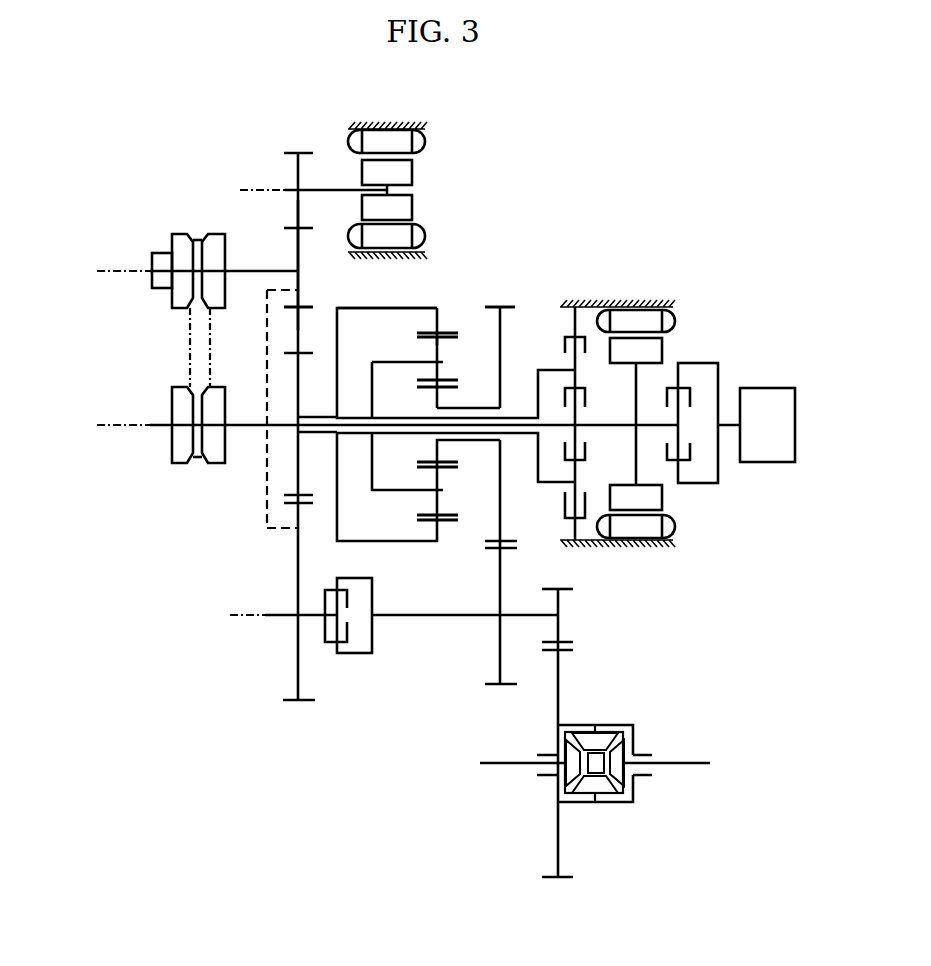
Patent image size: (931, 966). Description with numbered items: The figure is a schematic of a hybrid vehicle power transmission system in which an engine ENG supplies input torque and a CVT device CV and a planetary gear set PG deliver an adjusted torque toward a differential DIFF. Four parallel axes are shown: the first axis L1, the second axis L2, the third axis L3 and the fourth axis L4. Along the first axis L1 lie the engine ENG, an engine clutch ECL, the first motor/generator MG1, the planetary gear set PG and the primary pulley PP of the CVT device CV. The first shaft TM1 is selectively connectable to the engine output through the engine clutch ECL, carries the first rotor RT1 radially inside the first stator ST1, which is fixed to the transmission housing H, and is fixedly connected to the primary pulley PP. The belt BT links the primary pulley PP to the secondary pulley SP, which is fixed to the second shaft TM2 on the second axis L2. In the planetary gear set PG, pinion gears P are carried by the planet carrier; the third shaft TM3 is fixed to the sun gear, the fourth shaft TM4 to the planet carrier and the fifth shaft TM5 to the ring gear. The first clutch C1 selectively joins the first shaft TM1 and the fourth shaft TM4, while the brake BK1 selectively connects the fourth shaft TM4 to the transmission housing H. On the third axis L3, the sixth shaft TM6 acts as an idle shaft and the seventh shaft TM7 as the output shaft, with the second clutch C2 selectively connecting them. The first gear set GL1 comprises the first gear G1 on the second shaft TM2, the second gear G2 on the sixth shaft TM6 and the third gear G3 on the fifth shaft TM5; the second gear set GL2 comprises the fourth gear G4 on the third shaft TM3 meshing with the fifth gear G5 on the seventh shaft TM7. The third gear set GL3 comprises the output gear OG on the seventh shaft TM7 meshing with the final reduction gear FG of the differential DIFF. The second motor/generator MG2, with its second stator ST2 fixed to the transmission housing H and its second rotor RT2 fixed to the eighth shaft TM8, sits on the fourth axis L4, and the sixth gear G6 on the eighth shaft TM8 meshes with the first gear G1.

The transmission housing H is at (386, 121).
The sixth gear G6 is at (297, 165).
The fourth axis L4 is at (254, 191).
The continuously variable transmission device CV is at (163, 228).
The first gear set GL1 is at (275, 228).
The eighth shaft TM8 is at (330, 192).
The second shaft TM2 is at (256, 269).
The first gear G1 is at (299, 252).
The second axis L2 is at (112, 272).
The secondary pulley SP is at (172, 302).
The third gear G3 is at (297, 372).
The belt BT is at (188, 351).
The primary pulley PP is at (172, 394).
The first axis L1 is at (407, 426).
The pinion gear P is at (441, 350).
The third shaft TM3 is at (478, 407).
The fourth gear G4 is at (501, 346).
The fourth shaft TM4 is at (483, 434).
The fifth shaft TM5 is at (386, 307).
The planetary gear set PG is at (456, 314).
The second gear set GL2 is at (501, 292).
The brake BK1 is at (559, 326).
The second motor/generator MG2 is at (424, 189).
The second stator ST2 is at (386, 189).
The second rotor RT2 is at (387, 190).
The first motor/generator MG1 is at (656, 397).
The first stator ST1 is at (636, 424).
The first rotor RT1 is at (636, 424).
The engine clutch ECL is at (692, 378).
The first clutch C1 is at (598, 397).
The first shaft TM1 is at (602, 427).
The engine ENG is at (767, 425).
The second gear G2 is at (297, 565).
The sixth shaft TM6 is at (285, 618).
The second clutch C2 is at (356, 636).
The seventh shaft TM7 is at (432, 618).
The fifth gear G5 is at (499, 591).
The third axis L3 is at (235, 616).
The third gear set GL3 is at (574, 581).
The output gear OG is at (559, 602).
The final reduction gear FG is at (559, 692).
The differential DIFF is at (635, 713).